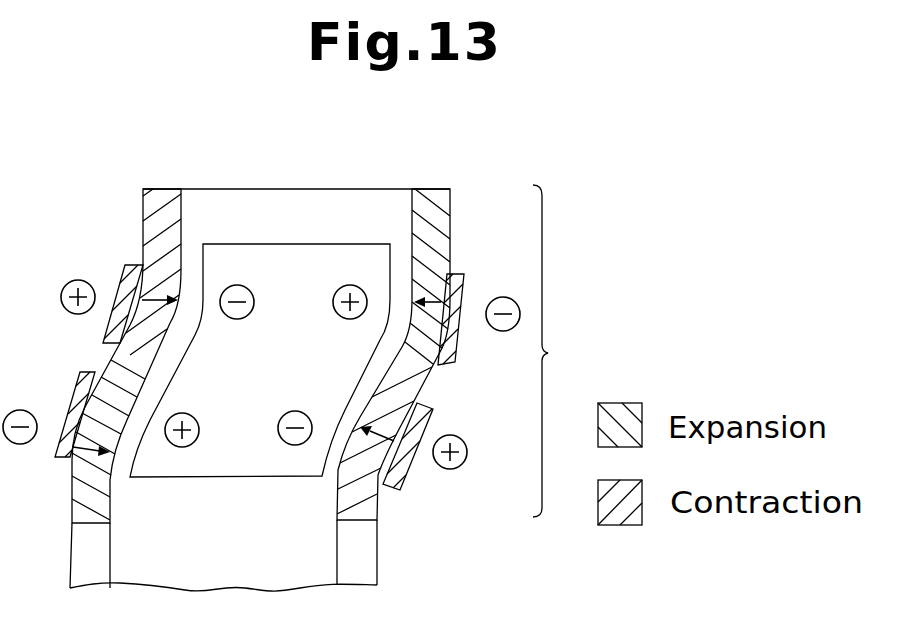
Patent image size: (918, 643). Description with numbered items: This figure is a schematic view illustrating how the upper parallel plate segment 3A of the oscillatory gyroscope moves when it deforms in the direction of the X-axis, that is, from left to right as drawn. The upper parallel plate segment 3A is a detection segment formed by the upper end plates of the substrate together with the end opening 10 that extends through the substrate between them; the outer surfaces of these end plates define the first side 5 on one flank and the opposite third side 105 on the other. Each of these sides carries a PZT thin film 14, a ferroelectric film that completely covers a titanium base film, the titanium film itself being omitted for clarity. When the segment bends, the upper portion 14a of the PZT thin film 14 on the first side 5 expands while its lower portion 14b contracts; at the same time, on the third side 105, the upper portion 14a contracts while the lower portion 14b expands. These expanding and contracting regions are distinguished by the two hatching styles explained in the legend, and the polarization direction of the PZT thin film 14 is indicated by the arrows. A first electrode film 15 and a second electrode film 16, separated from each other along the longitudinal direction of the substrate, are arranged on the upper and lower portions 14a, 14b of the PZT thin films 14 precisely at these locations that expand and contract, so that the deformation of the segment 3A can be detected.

The first side 5 is at (440, 197).
The third side 105 is at (175, 208).
The end opening 10 is at (186, 343).
The PZT thin film 14 is at (68, 500).
The upper portion 14a is at (164, 200).
The lower portion 14b is at (97, 508).
The first electrode film 15 is at (82, 374).
The second electrode film 16 is at (128, 278).
The upper parallel plate segment 3A is at (566, 351).